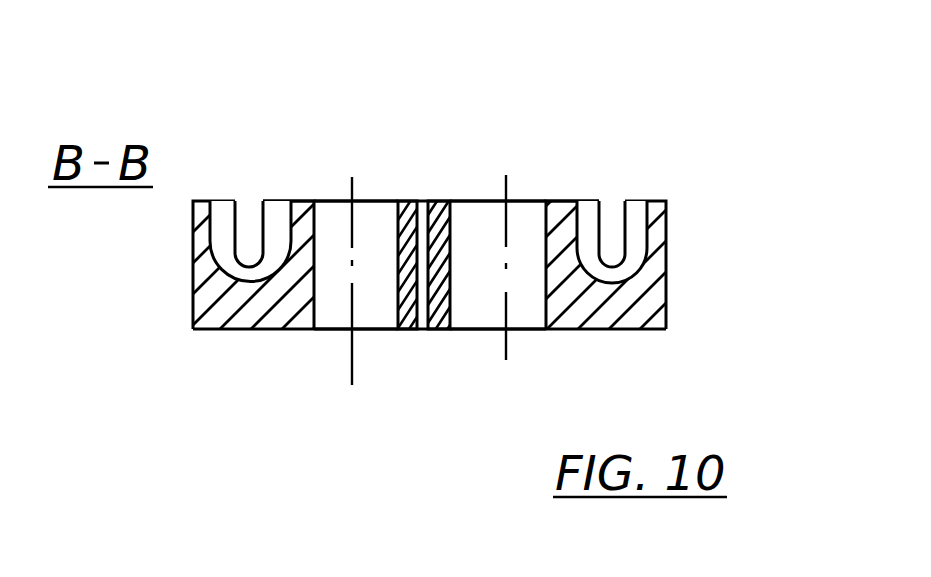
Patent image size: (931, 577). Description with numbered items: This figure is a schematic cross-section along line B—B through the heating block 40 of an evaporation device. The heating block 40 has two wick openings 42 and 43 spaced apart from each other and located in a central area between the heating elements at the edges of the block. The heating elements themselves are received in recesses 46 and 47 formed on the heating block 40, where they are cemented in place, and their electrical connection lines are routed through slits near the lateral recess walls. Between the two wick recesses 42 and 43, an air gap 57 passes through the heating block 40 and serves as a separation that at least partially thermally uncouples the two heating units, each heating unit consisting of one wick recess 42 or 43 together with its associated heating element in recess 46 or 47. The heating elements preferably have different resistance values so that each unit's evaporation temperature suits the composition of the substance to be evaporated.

The heating block 40 is at (605, 128).
The wick opening 42 is at (483, 225).
The wick opening 43 is at (333, 230).
The recess 46 is at (245, 230).
The recess 47 is at (610, 236).
The air gap 57 is at (422, 318).